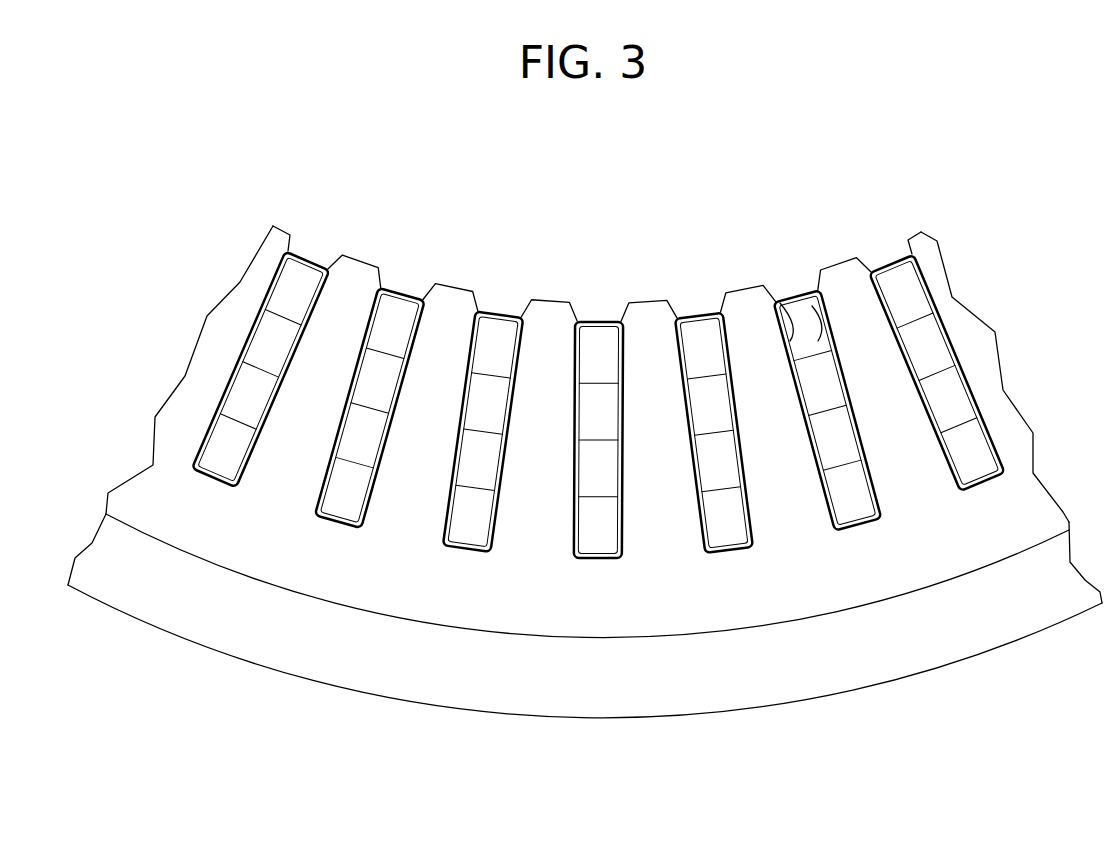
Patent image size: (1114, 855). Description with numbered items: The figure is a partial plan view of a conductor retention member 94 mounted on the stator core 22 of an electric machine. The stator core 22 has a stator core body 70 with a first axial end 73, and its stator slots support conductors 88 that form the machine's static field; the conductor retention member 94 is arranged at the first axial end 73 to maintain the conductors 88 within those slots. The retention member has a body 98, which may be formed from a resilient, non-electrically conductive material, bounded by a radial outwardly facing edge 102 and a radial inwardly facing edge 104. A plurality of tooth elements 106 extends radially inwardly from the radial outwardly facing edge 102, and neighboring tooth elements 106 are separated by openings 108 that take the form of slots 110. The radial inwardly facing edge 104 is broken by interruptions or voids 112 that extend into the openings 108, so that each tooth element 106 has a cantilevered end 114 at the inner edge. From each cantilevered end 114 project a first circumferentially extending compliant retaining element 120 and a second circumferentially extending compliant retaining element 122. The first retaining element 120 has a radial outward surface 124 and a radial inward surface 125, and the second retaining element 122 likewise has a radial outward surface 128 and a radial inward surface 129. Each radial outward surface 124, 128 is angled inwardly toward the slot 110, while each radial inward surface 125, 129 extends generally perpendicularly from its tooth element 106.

The stator core 22 is at (585, 517).
The stator core body 70 is at (892, 690).
The first axial end 73 is at (207, 612).
The conductors 88 is at (610, 467).
The conductor retention member 94 is at (585, 644).
The body 98 is at (746, 636).
The radial outwardly facing edge 102 is at (587, 643).
The radial inwardly facing edge 104 is at (662, 237).
The tooth elements 106 is at (341, 407).
The openings 108 is at (490, 426).
The slots 110 is at (495, 482).
The interruptions or voids 112 is at (580, 448).
The cantilevered end 114 is at (668, 300).
The first circumferentially extending compliant retaining element 120 is at (786, 224).
The second circumferentially extending compliant retaining element 122 is at (859, 363).
The radial outward surface 124 is at (775, 288).
The radial inward surface 125 is at (792, 350).
The radial outward surface 128 is at (815, 287).
The radial inward surface 129 is at (822, 332).